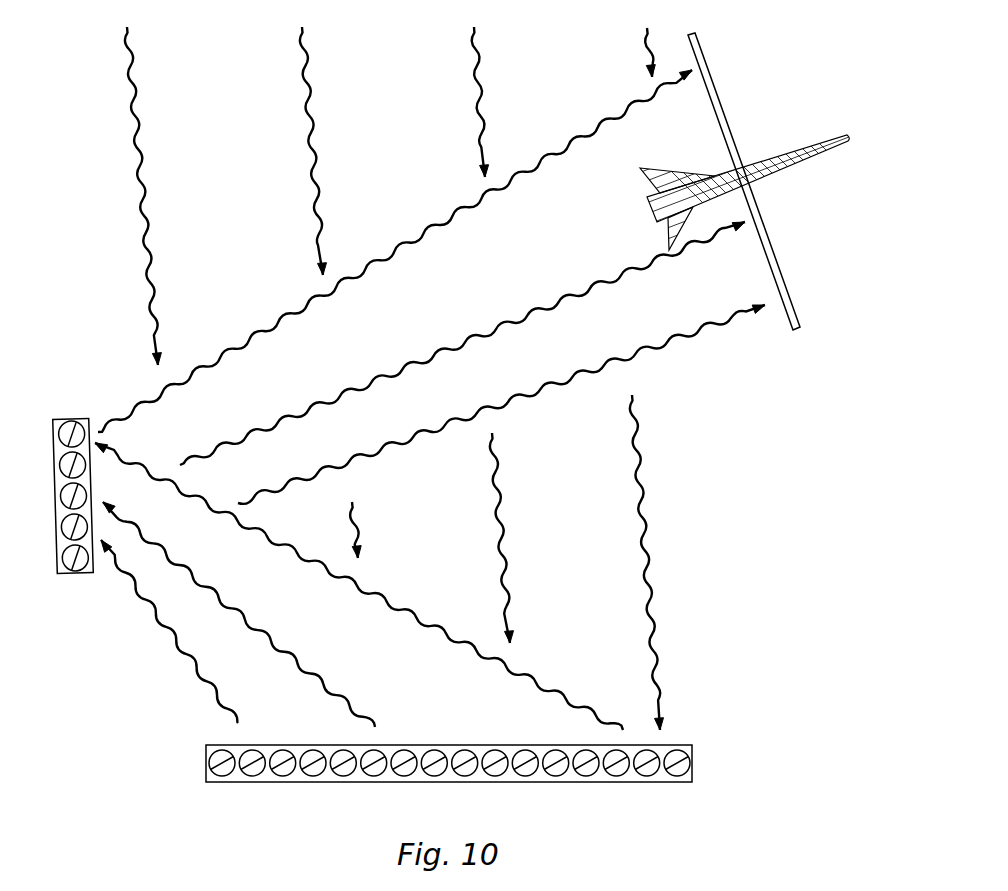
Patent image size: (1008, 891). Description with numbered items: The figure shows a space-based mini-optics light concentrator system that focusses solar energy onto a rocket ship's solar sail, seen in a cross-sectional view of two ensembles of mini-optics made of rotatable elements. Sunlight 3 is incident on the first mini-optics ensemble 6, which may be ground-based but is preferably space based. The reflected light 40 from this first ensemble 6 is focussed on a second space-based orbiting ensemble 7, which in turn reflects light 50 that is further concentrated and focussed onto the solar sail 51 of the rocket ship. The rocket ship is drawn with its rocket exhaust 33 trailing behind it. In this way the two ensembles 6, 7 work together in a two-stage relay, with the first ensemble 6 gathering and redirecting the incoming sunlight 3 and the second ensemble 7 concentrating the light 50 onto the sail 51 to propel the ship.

The sunlight 3 is at (317, 127).
The reflected light 50 is at (345, 286).
The reflected light 40 is at (407, 620).
The second mini-optics ensemble 7 is at (88, 615).
The first mini-optics ensemble 6 is at (178, 777).
The solar sail 51 is at (711, 76).
The rocket exhaust 33 is at (657, 220).